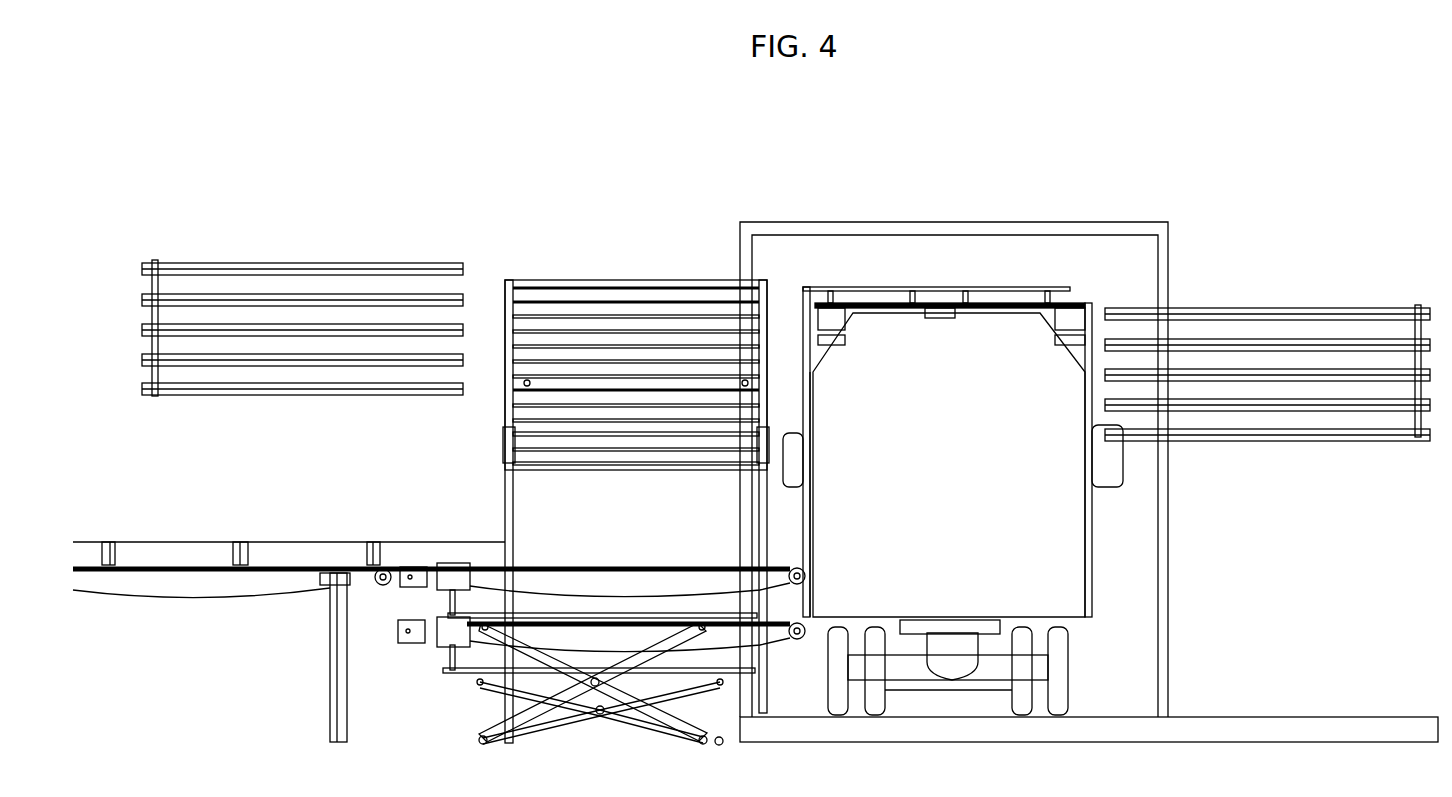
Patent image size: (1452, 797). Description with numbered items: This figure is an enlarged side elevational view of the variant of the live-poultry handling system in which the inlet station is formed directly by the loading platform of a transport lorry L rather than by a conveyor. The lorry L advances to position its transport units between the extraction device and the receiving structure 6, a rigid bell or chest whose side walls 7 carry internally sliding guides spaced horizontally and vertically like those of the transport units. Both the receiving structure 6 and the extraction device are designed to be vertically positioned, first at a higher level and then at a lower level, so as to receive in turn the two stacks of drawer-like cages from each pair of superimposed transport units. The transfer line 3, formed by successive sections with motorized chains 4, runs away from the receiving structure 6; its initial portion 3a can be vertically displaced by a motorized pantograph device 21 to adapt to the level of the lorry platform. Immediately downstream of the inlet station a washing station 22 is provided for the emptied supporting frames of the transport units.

The transfer line 3 is at (227, 642).
The initial portion of the transfer line 3a is at (635, 610).
The motorized chains 4 is at (272, 600).
The receiving structure 6 is at (636, 460).
The side walls 7 is at (615, 436).
The motorized pantograph device 21 is at (630, 712).
The washing station 22 is at (836, 222).
The transport lorry L is at (1018, 278).